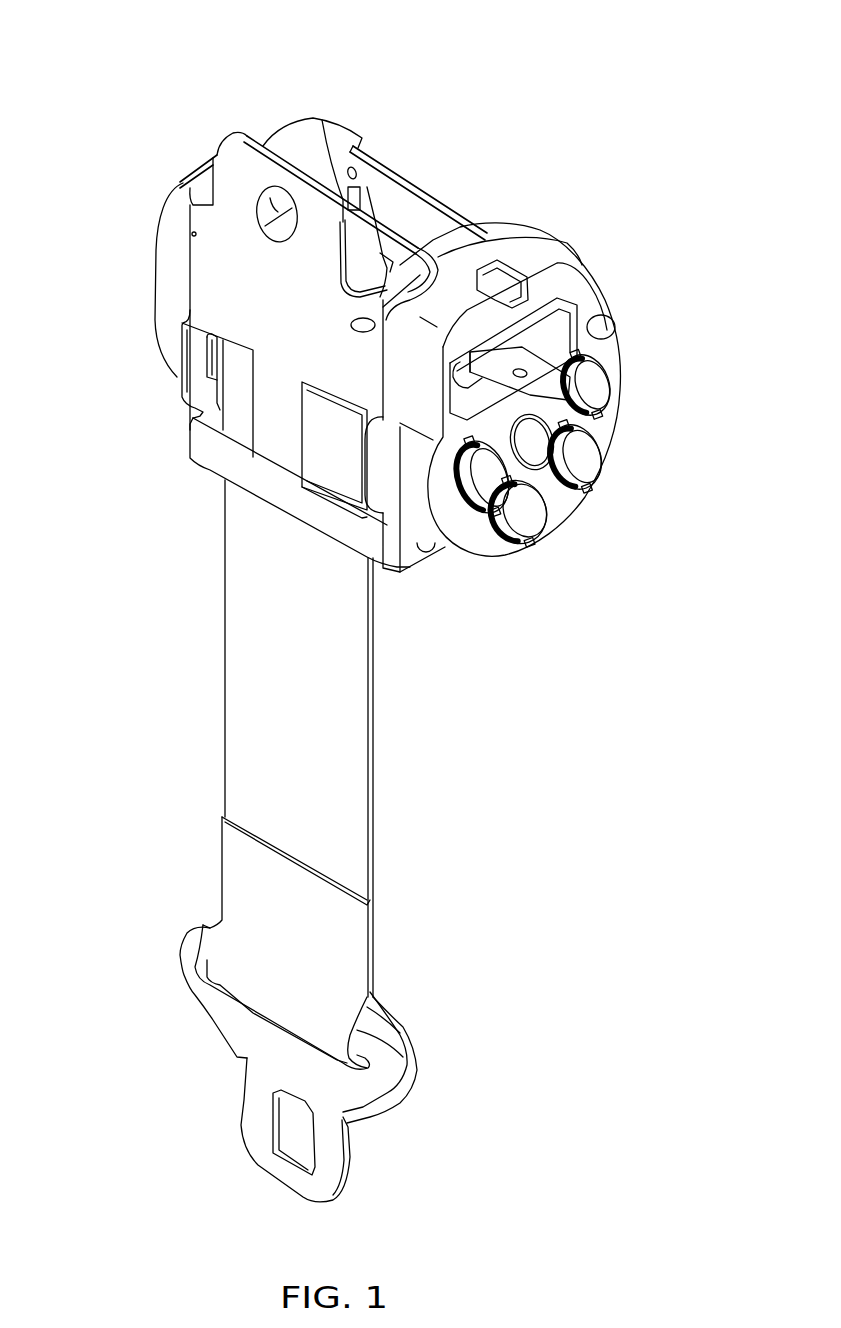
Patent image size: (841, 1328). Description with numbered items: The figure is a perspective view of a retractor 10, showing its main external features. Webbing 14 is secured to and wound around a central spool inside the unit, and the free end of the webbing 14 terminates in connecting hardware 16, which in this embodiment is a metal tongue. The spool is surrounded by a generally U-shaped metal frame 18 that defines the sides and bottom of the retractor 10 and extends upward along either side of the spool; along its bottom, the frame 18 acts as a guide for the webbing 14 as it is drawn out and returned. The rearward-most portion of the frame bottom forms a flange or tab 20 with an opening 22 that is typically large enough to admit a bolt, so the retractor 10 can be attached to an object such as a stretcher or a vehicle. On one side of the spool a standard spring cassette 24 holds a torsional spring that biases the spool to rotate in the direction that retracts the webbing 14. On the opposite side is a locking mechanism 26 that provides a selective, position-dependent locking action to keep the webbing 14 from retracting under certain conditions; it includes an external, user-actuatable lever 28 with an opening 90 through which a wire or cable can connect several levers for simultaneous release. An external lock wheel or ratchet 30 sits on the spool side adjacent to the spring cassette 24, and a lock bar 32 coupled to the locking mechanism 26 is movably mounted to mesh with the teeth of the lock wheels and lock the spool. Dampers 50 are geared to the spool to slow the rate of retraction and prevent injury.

The retractor 10 is at (378, 82).
The webbing 14 is at (240, 672).
The connecting hardware 16 is at (252, 1103).
The frame 18 is at (203, 267).
The flange or tab 20 is at (240, 157).
The opening 22 is at (273, 188).
The spring cassette 24 is at (173, 228).
The locking mechanism 26 is at (563, 244).
The lever 28 is at (420, 390).
The lock wheel or ratchet 30 is at (322, 120).
The lock bar 32 is at (410, 237).
The dampers 50 is at (600, 377).
The opening 90 is at (462, 373).